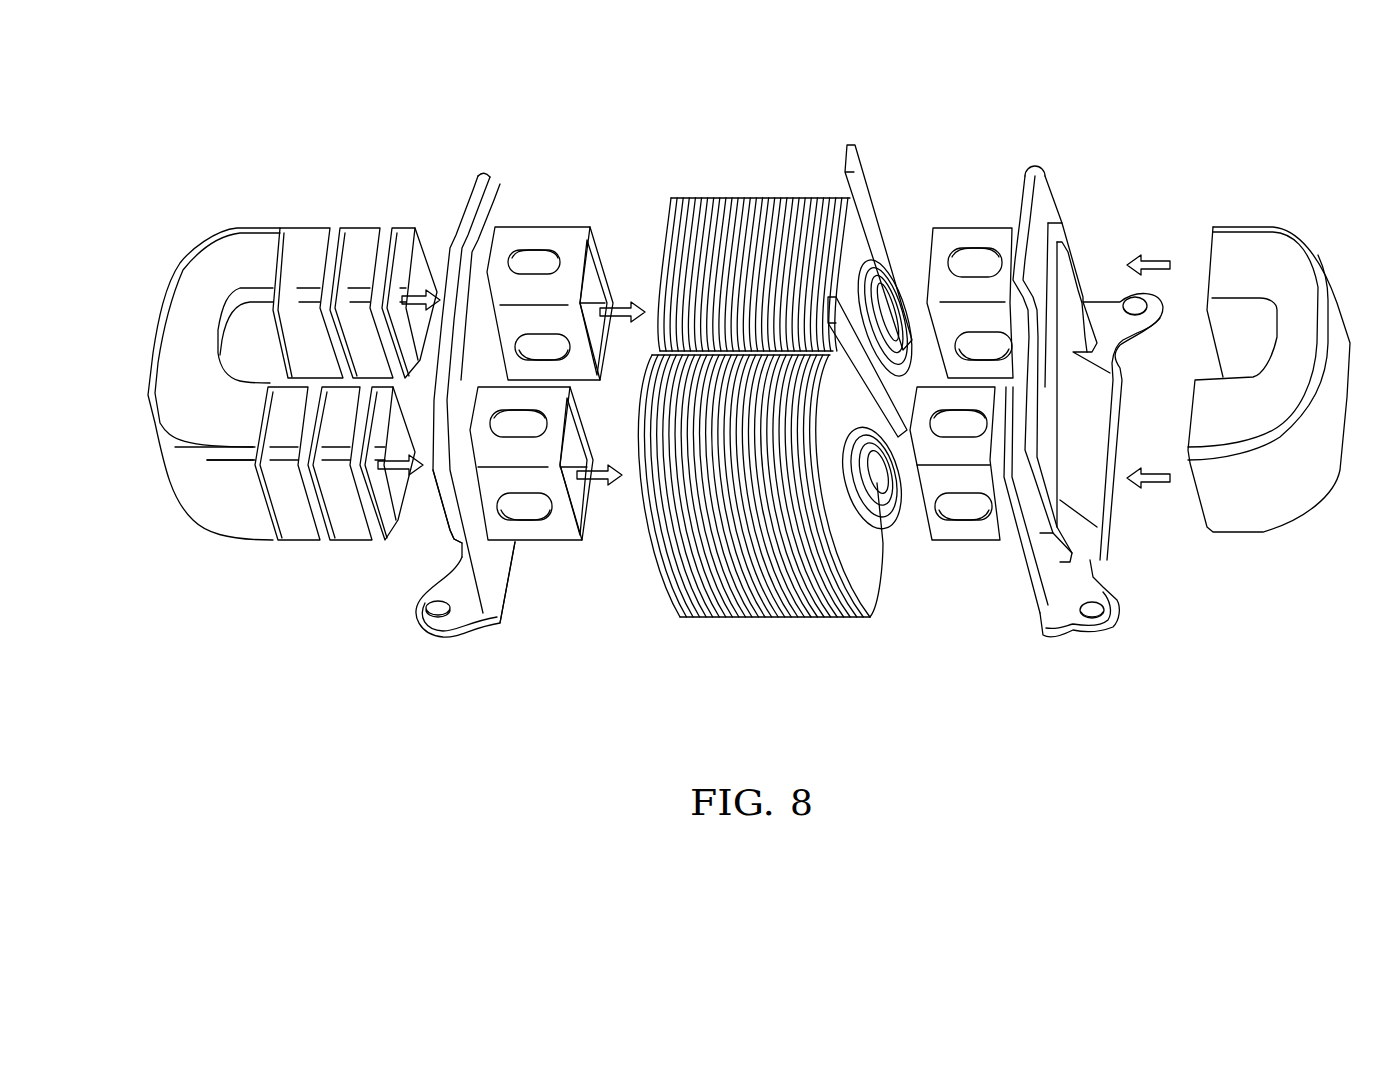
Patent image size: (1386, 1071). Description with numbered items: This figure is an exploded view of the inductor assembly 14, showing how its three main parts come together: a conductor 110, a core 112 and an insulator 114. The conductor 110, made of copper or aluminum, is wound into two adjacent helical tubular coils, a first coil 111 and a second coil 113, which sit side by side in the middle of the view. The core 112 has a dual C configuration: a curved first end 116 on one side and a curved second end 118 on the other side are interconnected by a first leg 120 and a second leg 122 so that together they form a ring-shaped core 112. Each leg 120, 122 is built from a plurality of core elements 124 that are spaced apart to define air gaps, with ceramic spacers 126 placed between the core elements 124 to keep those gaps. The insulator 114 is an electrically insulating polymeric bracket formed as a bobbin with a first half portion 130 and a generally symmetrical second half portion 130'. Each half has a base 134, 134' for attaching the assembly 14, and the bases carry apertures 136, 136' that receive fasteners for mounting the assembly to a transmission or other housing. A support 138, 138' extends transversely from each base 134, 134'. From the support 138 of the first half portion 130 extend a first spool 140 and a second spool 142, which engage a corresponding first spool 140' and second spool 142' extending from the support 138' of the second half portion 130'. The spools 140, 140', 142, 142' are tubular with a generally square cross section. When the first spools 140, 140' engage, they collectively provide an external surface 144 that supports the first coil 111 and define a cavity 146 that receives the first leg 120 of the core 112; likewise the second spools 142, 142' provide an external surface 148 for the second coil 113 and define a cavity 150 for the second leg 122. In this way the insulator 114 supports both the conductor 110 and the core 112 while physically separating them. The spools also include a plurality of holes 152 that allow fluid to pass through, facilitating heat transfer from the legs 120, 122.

The inductor assembly 14 is at (813, 88).
The conductor 110 is at (756, 188).
The first coil 111 is at (718, 197).
The core 112 is at (400, 228).
The second coil 113 is at (775, 617).
The insulator 114 is at (611, 258).
The first end 116 is at (190, 520).
The second end 118 is at (1275, 530).
The first leg 120 is at (337, 215).
The second leg 122 is at (383, 609).
The core elements 124 is at (303, 525).
The ceramic spacers 126 is at (325, 517).
The first half portion 130 is at (528, 410).
The second half portion 130' is at (1027, 413).
The base 134 is at (457, 617).
The base 134' is at (1081, 633).
The apertures 136 is at (425, 647).
The apertures 136' is at (1111, 654).
The support 138 is at (431, 509).
The support 138' is at (1083, 389).
The first spool 140 is at (571, 382).
The first spool 140' is at (980, 249).
The second spool 142 is at (558, 483).
The second spool 142' is at (960, 498).
The external surface 144 is at (542, 227).
The cavity 146 is at (613, 293).
The external surface 148 is at (527, 540).
The cavity 150 is at (600, 505).
The holes 152 is at (972, 267).